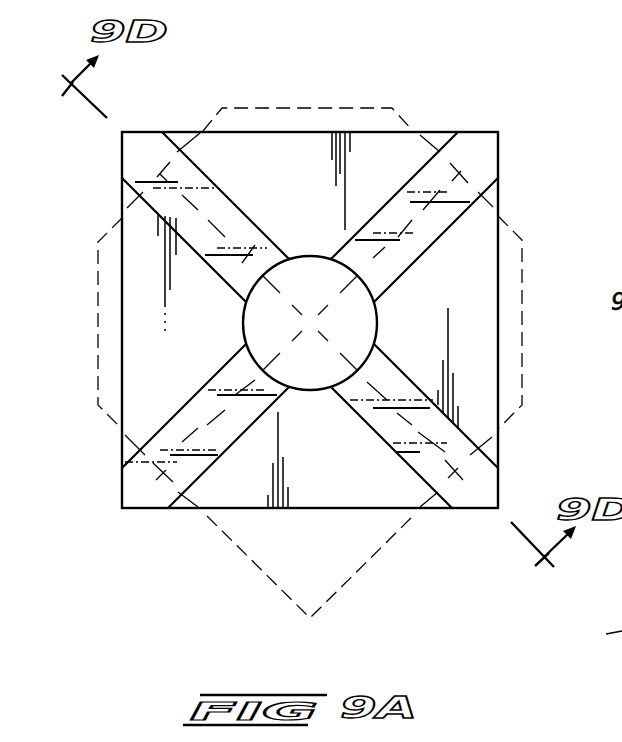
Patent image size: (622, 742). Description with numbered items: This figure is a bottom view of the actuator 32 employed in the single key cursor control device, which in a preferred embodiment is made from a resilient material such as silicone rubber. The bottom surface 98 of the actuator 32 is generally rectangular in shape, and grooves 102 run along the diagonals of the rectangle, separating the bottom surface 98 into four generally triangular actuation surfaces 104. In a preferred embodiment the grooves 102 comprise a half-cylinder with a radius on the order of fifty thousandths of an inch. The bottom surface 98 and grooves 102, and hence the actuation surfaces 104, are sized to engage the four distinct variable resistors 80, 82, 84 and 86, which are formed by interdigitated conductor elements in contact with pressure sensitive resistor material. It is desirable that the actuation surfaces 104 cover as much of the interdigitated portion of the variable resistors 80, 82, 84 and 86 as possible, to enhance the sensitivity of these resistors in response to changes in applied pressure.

The actuator 32 is at (503, 258).
The variable resistor 80 is at (110, 325).
The variable resistor 82 is at (324, 125).
The variable resistor 84 is at (508, 357).
The variable resistor 86 is at (263, 535).
The bottom surface 98 is at (253, 163).
The grooves 102 is at (471, 487).
The actuation surfaces 104 is at (374, 160).